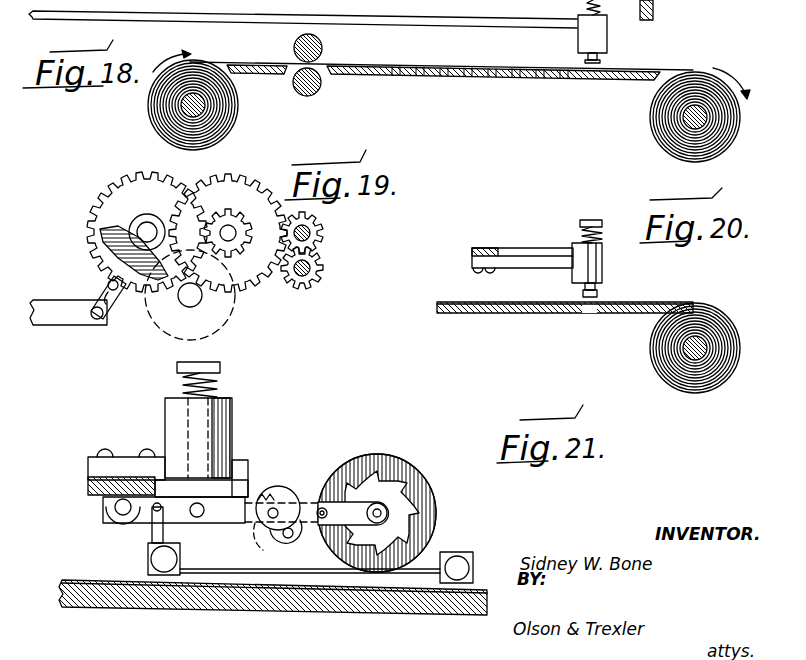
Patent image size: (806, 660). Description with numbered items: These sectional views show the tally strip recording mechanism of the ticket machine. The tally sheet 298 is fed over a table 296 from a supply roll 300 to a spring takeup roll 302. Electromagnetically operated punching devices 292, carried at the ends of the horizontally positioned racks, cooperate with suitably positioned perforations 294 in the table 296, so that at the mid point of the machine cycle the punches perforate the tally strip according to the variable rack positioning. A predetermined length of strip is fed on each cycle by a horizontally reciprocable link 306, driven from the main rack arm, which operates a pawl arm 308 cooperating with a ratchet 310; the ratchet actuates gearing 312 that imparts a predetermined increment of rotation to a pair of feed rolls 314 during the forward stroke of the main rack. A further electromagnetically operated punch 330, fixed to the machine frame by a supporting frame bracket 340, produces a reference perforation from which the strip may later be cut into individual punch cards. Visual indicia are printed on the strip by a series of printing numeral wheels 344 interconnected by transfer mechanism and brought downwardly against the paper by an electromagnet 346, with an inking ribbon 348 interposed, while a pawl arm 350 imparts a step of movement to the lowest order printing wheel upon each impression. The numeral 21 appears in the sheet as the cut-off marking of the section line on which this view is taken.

In FIG. 18, the frame member 21 is at (636, 10).
In FIG. 18, the electromagnetically operated punching devices 292 is at (600, 38).
In FIG. 18, the perforations 294 is at (518, 78).
In FIG. 18, the table 296 is at (352, 75).
In FIG. 20, the table 296 is at (493, 313).
In FIG. 21, the table 296 is at (100, 607).
In FIG. 18, the tally sheet 298 is at (377, 62).
In FIG. 20, the tally sheet 298 is at (450, 302).
In FIG. 21, the tally sheet 298 is at (90, 581).
In FIG. 18, the supply roll 300 is at (222, 123).
In FIG. 19, the supply roll 300 is at (227, 323).
In FIG. 18, the spring takeup roll 302 is at (672, 137).
In FIG. 20, the spring takeup roll 302 is at (667, 352).
In FIG. 19, the horizontally reciprocable link 306 is at (53, 317).
In FIG. 19, the pawl arm 308 is at (100, 288).
In FIG. 19, the ratchet 310 is at (100, 238).
In FIG. 19, the gearing 312 is at (193, 187).
In FIG. 18, the feed rolls 314 is at (298, 72).
In FIG. 20, the electromagnetically operated punch 330 is at (593, 267).
In FIG. 20, the supporting frame bracket 340 is at (492, 248).
In FIG. 21, the supporting frame bracket 340 is at (88, 483).
In FIG. 21, the printing numeral wheels 344 is at (455, 446).
In FIG. 21, the electromagnet 346 is at (232, 422).
In FIG. 21, the inking ribbon 348 is at (230, 568).
In FIG. 21, the pawl arm 350 is at (278, 528).